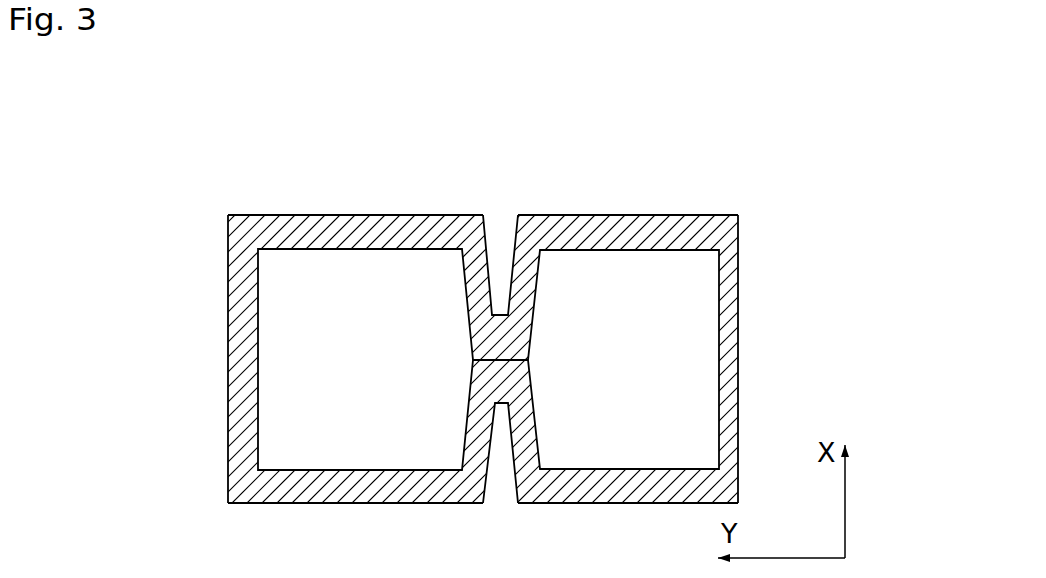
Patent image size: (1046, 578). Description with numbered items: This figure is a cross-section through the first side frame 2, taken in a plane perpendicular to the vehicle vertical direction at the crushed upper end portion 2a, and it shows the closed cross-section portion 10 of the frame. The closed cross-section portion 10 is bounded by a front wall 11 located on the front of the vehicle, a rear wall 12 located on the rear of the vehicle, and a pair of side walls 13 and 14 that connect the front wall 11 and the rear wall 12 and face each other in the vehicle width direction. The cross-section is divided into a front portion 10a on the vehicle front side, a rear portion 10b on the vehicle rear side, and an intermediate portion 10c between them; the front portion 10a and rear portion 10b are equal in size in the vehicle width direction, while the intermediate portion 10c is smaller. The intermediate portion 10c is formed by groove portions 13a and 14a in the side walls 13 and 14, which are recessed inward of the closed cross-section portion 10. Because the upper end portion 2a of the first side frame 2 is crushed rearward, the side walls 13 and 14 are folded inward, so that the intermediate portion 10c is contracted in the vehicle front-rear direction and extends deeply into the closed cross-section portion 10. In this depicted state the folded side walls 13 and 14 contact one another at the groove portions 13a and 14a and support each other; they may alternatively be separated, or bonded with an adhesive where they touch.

The first side frame 2 is at (254, 186).
The upper end portion 2a is at (523, 306).
The closed cross-section portion 10 is at (213, 393).
The front portion 10a is at (340, 217).
The rear portion 10b is at (621, 225).
The intermediate portion 10c is at (490, 258).
The front wall 11 is at (227, 302).
The rear wall 12 is at (738, 408).
The side wall 13 is at (312, 470).
The groove portion 13a is at (536, 439).
The side wall 14 is at (442, 217).
The groove portion 14a is at (532, 322).